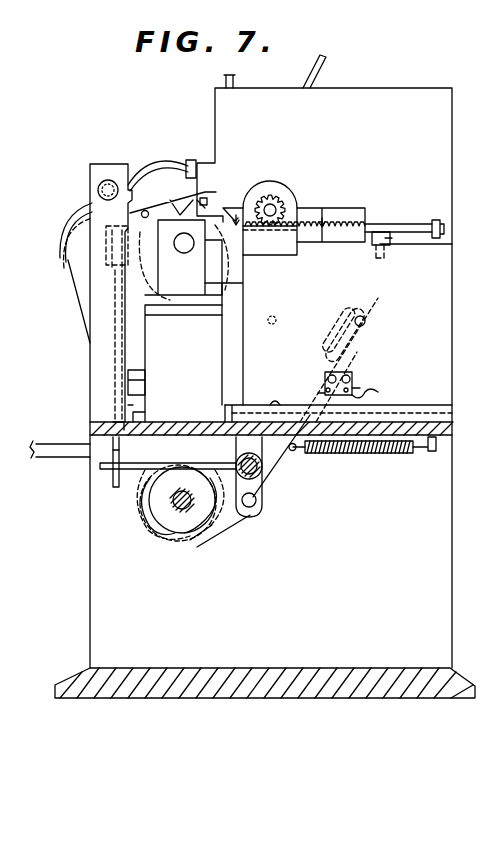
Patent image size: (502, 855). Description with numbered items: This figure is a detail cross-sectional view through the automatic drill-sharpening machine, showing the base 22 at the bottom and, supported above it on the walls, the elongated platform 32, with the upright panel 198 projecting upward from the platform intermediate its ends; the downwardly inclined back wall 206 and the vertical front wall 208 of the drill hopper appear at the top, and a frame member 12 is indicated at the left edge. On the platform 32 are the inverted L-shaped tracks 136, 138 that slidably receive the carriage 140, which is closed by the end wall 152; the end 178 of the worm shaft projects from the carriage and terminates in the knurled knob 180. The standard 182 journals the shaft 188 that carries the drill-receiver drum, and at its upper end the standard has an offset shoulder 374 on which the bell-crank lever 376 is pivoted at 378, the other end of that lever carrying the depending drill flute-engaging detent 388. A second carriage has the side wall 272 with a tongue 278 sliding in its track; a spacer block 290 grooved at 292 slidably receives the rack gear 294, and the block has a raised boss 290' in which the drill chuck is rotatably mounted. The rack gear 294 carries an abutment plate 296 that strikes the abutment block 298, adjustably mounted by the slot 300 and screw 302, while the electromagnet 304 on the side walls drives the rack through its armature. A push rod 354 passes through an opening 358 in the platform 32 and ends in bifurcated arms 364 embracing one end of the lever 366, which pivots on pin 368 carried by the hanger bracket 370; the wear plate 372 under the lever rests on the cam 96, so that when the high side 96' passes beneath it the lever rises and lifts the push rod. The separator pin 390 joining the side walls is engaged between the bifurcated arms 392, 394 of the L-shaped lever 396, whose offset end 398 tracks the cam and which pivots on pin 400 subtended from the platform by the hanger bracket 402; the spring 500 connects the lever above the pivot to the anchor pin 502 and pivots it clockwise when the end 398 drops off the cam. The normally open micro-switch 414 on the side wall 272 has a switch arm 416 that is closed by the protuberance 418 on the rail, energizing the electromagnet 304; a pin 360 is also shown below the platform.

The frame upright 12 is at (66, 416).
The base 22 is at (403, 688).
The platform 32 is at (90, 431).
The cam 96 is at (176, 519).
The high side of the cam 96' is at (150, 513).
The track 136 is at (232, 405).
The track 138 is at (146, 411).
The carriage 140 is at (226, 350).
The end wall 152 is at (216, 374).
The end of worm shaft 178 is at (143, 386).
The knob 180 is at (128, 372).
The standard 182 is at (166, 289).
The shaft 188 is at (184, 253).
The panel 198 is at (452, 148).
The back wall 206 is at (323, 65).
The front wall 208 is at (233, 74).
The side wall 272 is at (446, 356).
The tongue 278 is at (372, 453).
The spacer block 290 is at (274, 230).
The raised boss 290' is at (286, 197).
The groove 292 is at (272, 233).
The rack gear 294 is at (398, 226).
The abutment plate 296 is at (437, 220).
The abutment block 298 is at (391, 243).
The slot 300 is at (388, 260).
The screw 302 is at (380, 231).
The electromagnet 304 is at (366, 190).
The push rod 354 is at (115, 350).
The opening 358 is at (114, 424).
The pin 360 is at (113, 491).
The bifurcated arm 364 is at (112, 474).
The lever 366 is at (130, 466).
The pivot pin 368 is at (240, 459).
The hanger bracket 370 is at (264, 482).
The wear plate 372 is at (173, 470).
The offset shoulder 374 is at (150, 210).
The bell-crank lever 376 is at (160, 205).
The pivot 378 is at (154, 172).
The drill flute-engaging detent 388 is at (197, 200).
The separator pin 390 is at (366, 309).
The bifurcated arm 392 is at (350, 318).
The bifurcated arm 394 is at (367, 333).
The L-shaped lever 396 is at (289, 462).
The cam-engaging offset end 398 is at (196, 548).
The pivot pin 400 is at (257, 506).
The hanger bracket 402 is at (243, 483).
The micro-switch 414 is at (352, 378).
The switch arm 416 is at (372, 393).
The protuberance 418 is at (275, 402).
The spring 500 is at (405, 454).
The anchor pin 502 is at (433, 452).